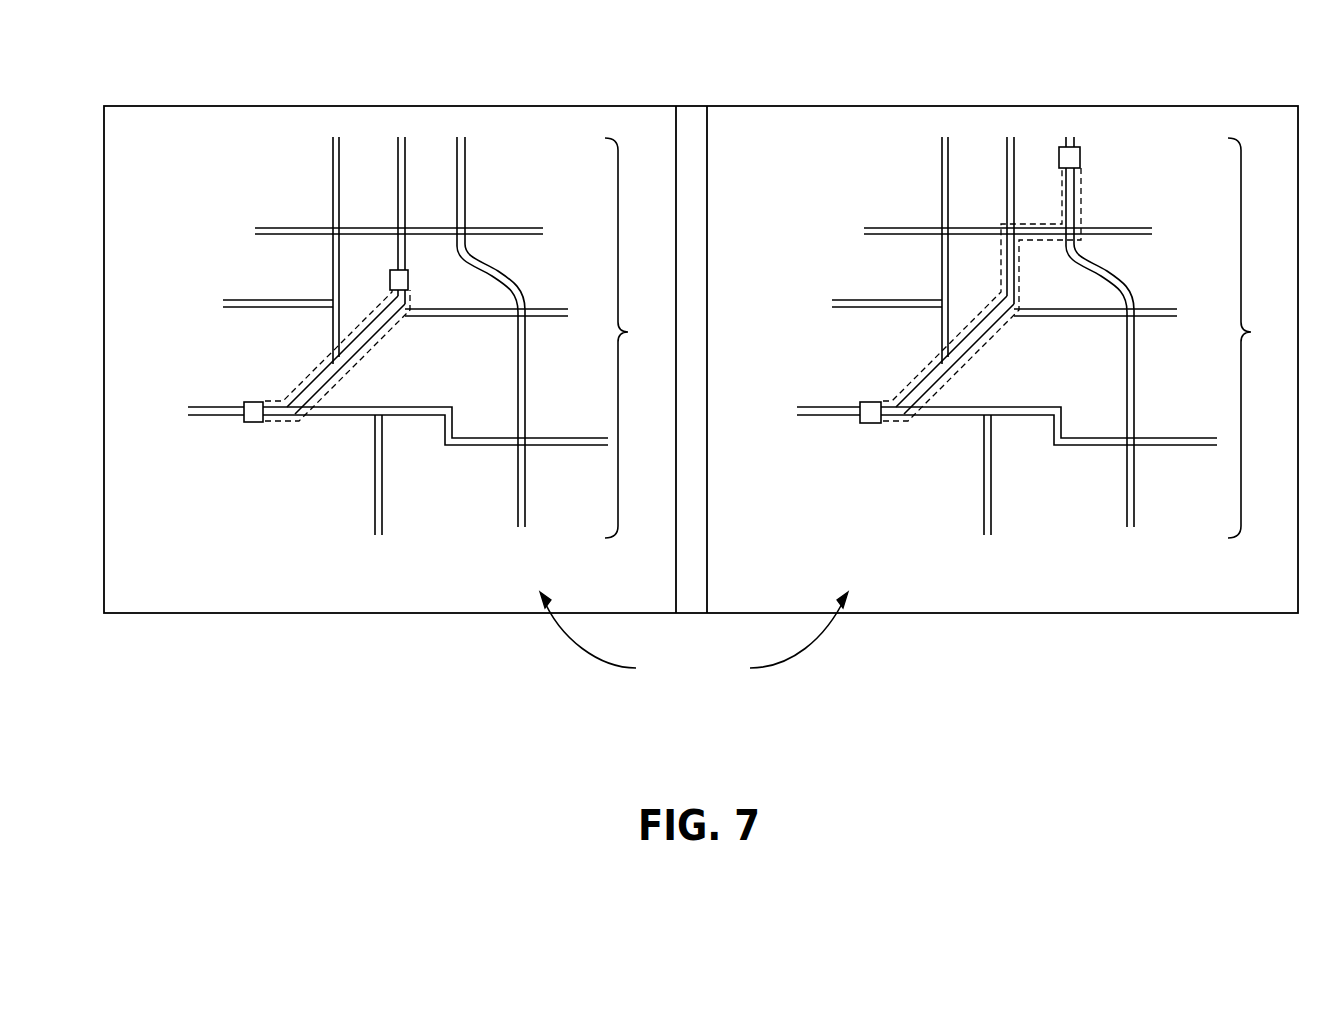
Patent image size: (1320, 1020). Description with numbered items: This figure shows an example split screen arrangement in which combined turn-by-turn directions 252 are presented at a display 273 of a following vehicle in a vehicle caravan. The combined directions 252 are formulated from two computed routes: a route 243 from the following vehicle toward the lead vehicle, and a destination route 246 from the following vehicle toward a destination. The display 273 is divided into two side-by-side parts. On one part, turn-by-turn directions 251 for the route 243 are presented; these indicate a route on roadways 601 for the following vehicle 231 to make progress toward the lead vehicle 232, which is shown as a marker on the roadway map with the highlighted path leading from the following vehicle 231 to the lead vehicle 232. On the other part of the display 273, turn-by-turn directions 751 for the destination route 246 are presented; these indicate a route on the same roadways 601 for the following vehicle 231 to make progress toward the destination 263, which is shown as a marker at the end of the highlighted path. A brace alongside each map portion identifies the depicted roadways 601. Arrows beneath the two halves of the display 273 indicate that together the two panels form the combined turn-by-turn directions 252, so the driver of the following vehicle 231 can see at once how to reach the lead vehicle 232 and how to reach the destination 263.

The display 273 is at (377, 105).
The turn-by-turn directions 251 is at (191, 175).
The route 243 is at (268, 300).
The turn-by-turn directions 751 is at (802, 165).
The destination route 246 is at (905, 294).
The vehicle 232 is at (409, 280).
The vehicle 231 is at (252, 422).
The roadways 601 is at (945, 338).
The destination 263 is at (1081, 157).
The combined turn-by-turn directions 252 is at (694, 661).